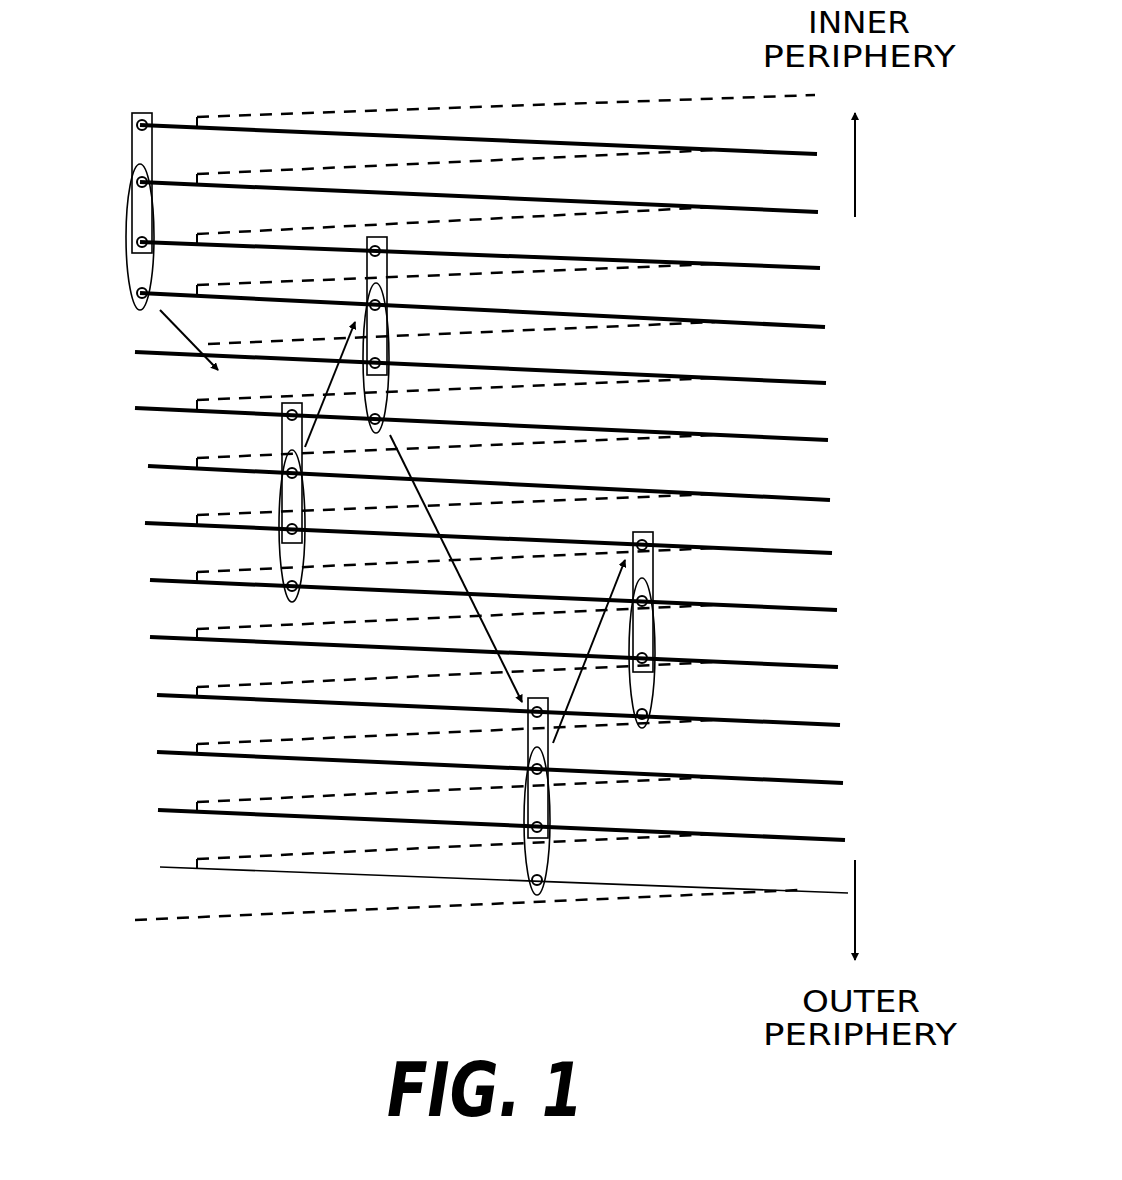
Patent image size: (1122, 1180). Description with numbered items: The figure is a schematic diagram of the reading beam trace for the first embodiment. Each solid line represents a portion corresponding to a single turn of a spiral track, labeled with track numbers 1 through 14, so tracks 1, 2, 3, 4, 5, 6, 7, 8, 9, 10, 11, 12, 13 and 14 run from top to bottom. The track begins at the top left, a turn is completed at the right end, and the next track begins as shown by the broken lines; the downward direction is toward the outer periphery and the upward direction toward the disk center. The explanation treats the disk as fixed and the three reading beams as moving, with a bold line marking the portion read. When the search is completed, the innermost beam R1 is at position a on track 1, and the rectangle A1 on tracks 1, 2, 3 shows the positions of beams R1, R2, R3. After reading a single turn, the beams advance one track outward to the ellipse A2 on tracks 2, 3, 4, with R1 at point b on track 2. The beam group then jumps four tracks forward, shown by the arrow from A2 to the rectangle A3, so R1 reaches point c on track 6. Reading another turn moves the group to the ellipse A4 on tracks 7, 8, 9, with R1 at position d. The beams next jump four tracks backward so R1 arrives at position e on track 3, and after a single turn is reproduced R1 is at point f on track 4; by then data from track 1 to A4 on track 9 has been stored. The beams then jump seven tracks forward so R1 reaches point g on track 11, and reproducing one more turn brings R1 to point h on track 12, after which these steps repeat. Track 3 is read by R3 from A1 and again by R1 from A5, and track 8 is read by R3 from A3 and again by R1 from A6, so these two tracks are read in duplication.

The rectangle A1 is at (142, 113).
The ellipse A2 is at (155, 240).
The rectangle A3 is at (290, 402).
The ellipse A4 is at (304, 562).
The position A5 is at (366, 289).
The position A6 is at (652, 532).
The position a is at (148, 122).
The point b is at (148, 182).
The point c is at (283, 445).
The position d is at (300, 472).
The position e is at (375, 236).
The point f is at (364, 322).
The point g is at (543, 711).
The point h is at (534, 766).
The track 1 is at (442, 128).
The track 2 is at (443, 186).
The track 3 is at (444, 244).
The track 4 is at (446, 300).
The track 5 is at (447, 358).
The track 6 is at (448, 415).
The track 7 is at (449, 474).
The track 8 is at (450, 530).
The track 9 is at (452, 587).
The track 10 is at (448, 646).
The track 11 is at (449, 704).
The track 12 is at (451, 762).
The track 13 is at (452, 820).
The track 14 is at (453, 875).